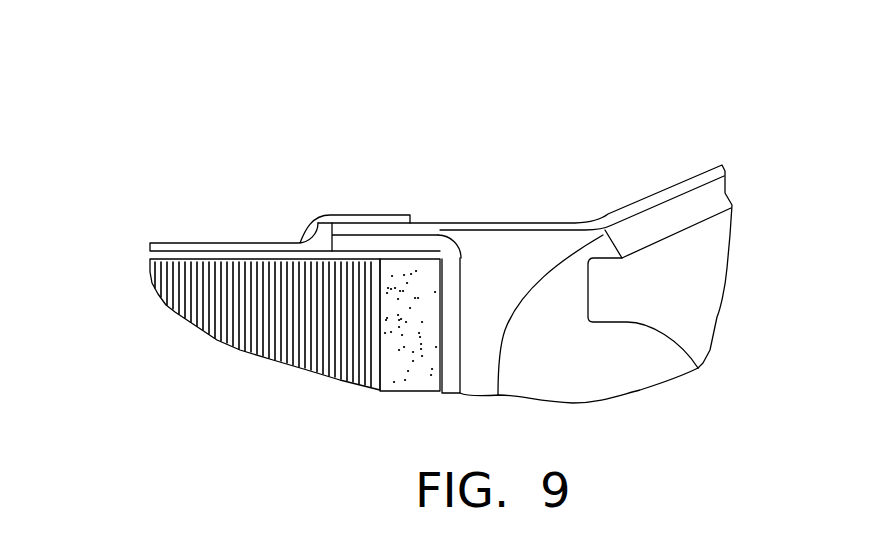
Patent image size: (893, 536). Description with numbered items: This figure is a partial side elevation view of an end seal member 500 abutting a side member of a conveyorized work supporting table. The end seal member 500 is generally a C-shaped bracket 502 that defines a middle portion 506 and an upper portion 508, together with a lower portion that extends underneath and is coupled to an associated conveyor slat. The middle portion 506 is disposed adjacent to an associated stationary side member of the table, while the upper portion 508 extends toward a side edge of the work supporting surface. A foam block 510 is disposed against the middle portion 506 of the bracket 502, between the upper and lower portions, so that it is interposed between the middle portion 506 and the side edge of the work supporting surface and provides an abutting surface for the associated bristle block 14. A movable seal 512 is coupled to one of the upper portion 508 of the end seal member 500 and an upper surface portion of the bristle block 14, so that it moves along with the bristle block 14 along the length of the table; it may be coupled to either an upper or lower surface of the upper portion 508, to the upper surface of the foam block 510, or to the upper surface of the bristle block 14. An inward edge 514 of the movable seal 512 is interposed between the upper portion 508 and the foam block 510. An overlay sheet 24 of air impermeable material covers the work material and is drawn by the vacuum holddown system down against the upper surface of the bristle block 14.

The end seal member 500 is at (343, 140).
The C-shaped bracket 502 is at (508, 255).
The middle portion 506 is at (453, 327).
The upper portion 508 is at (392, 240).
The foam block 510 is at (412, 370).
The movable seal 512 is at (312, 241).
The inward edge 514 is at (423, 250).
The overlay sheet 24 is at (193, 244).
The bristle block 14 is at (208, 313).